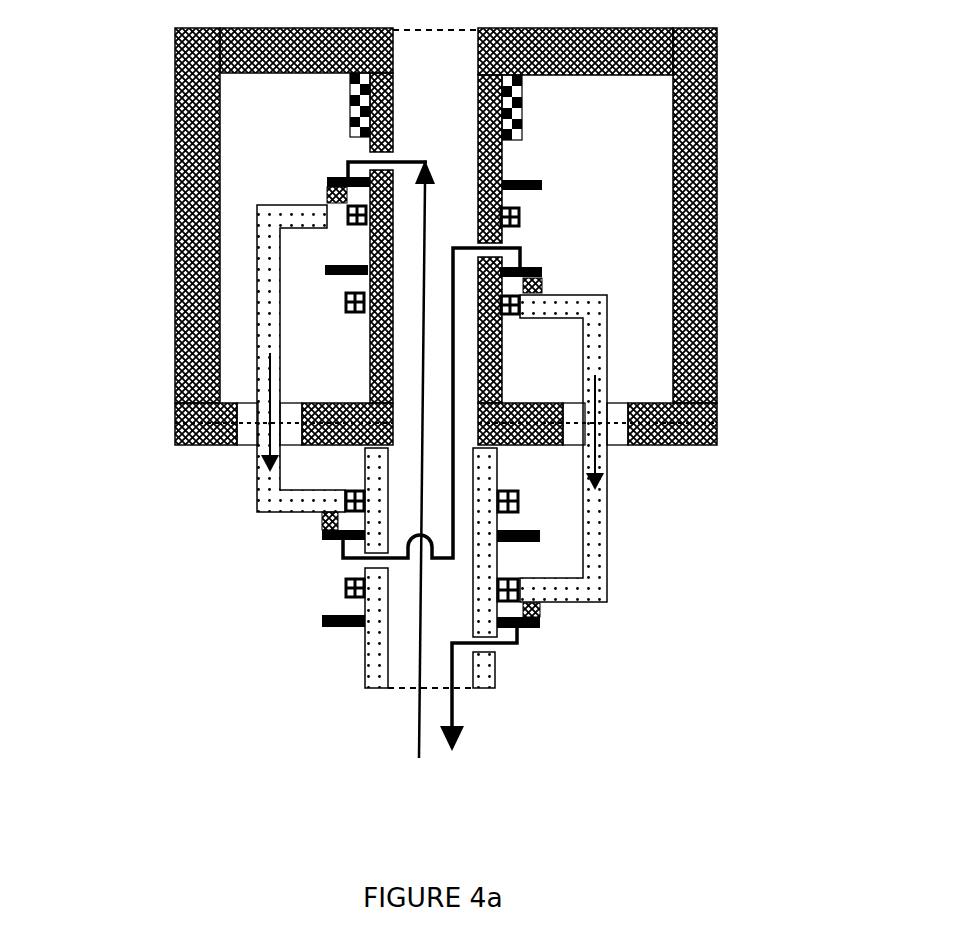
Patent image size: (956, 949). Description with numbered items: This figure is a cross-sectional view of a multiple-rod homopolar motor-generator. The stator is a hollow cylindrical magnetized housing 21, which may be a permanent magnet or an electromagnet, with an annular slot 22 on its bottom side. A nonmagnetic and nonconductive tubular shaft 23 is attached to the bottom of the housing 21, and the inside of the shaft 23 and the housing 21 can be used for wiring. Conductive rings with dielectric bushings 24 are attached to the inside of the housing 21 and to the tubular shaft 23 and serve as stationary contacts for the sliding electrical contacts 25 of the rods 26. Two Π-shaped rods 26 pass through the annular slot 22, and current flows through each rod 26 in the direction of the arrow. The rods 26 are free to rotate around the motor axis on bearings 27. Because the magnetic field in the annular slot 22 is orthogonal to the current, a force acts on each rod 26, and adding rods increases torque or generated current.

The hollow cylindrical magnetized housing 21 is at (175, 75).
The annular slot 22 is at (240, 444).
The tubular shaft 23 is at (365, 657).
The conductive rings with dielectric bushings 24 is at (542, 183).
The sliding electrical contacts 25 is at (347, 193).
The rod 26 is at (257, 490).
The bearings 27 is at (348, 218).